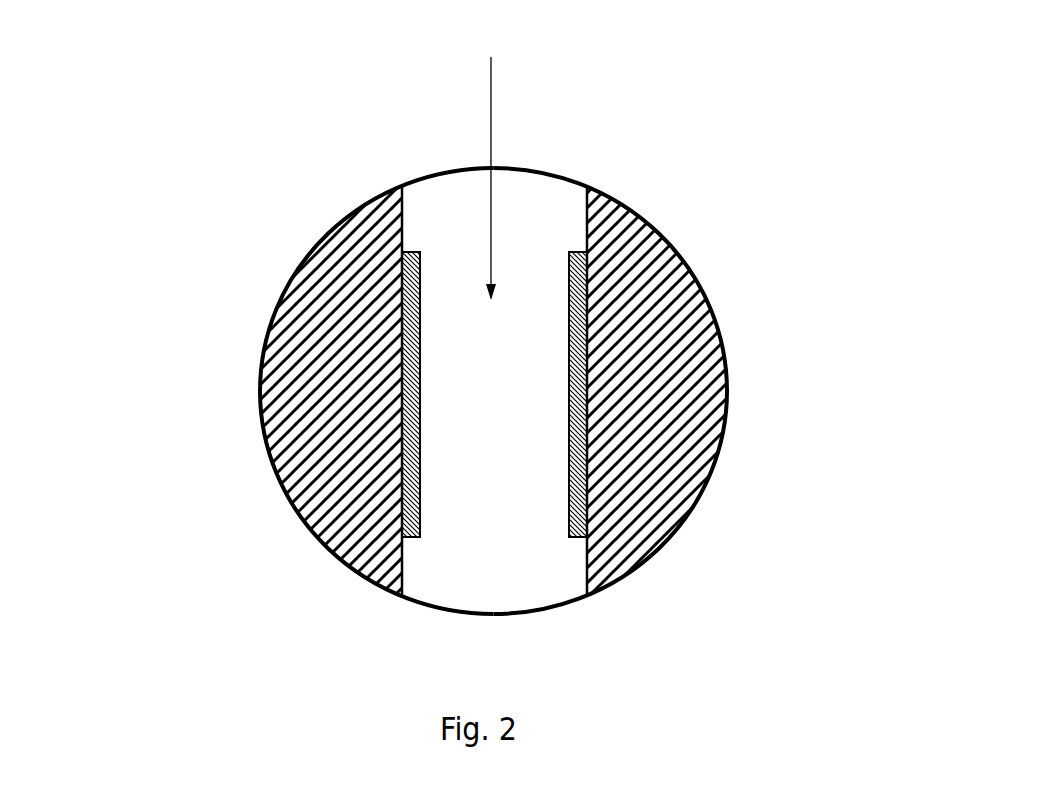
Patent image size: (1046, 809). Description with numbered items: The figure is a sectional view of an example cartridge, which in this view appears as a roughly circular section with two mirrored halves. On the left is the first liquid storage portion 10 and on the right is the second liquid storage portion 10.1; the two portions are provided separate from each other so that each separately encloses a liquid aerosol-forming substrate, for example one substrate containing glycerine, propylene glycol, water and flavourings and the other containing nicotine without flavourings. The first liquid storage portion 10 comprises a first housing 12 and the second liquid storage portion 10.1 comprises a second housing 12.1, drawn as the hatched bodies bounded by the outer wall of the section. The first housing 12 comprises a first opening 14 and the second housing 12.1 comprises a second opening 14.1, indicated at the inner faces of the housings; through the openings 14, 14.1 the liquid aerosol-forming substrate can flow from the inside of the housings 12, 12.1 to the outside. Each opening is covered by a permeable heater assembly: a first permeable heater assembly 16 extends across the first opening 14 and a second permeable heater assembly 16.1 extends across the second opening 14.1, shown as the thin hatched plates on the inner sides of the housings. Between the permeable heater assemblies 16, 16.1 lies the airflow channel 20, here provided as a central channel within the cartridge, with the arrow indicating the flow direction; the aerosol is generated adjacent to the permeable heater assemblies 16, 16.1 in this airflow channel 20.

The first liquid storage portion 10 is at (360, 428).
The second liquid storage portion 10.1 is at (627, 430).
The first housing 12 is at (307, 527).
The second housing 12.1 is at (683, 532).
The first opening 14 is at (390, 348).
The second opening 14.1 is at (600, 347).
The first permeable heater assembly 16 is at (400, 283).
The second permeable heater assembly 16.1 is at (593, 285).
The airflow channel 20 is at (494, 163).